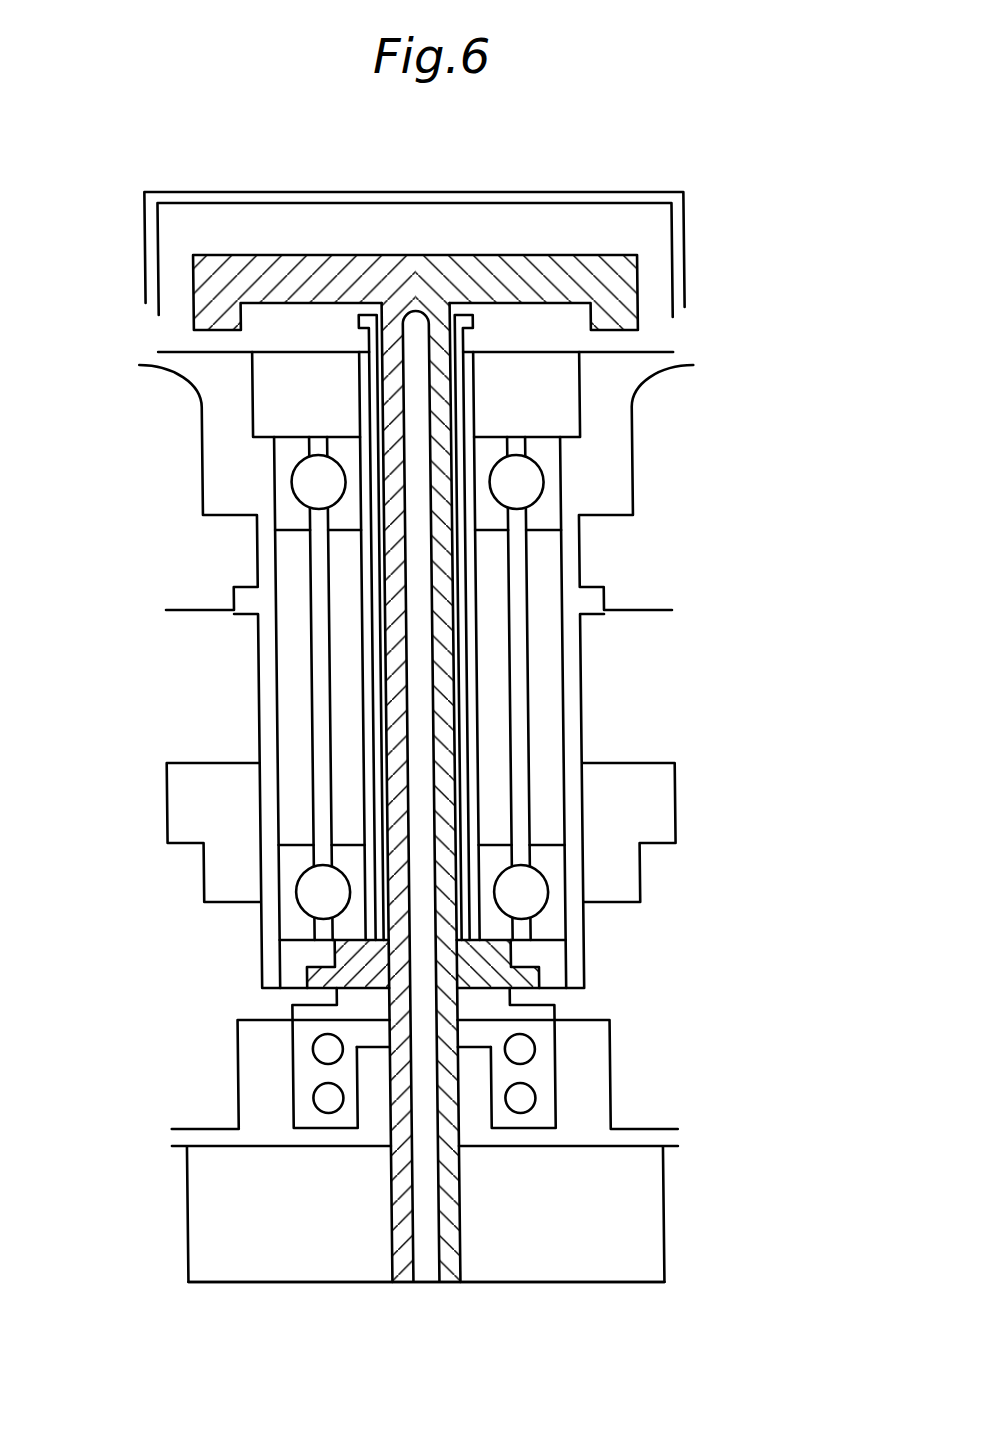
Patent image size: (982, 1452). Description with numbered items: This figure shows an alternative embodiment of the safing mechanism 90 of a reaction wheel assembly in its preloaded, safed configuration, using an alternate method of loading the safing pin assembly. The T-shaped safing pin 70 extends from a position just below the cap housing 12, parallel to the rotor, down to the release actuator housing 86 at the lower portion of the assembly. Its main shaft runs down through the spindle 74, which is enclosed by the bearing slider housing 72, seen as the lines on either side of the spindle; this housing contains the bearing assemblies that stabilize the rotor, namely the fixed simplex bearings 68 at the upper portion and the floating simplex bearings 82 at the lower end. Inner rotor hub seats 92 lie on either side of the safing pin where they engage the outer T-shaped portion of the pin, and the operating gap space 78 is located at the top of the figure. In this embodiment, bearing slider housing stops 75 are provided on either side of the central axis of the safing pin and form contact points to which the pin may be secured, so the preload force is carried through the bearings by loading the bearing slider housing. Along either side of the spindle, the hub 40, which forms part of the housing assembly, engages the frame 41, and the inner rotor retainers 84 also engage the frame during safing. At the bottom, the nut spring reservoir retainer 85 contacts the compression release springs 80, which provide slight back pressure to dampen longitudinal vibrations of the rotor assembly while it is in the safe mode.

The safing mechanism 90 is at (695, 122).
The cap housing 12 is at (205, 190).
The safing pin 70 is at (340, 266).
The spindle shaft 74 is at (438, 328).
The bearing slider housing stops 75 is at (330, 334).
The operating gap space 78 is at (193, 343).
The bearing slider housing 72 is at (363, 412).
The inner rotor hub seats 92 is at (220, 428).
The fixed simplex bearings 68 is at (318, 490).
The floating simplex bearings 82 is at (332, 893).
The hub 40 is at (277, 925).
The inner rotor retainers 84 is at (295, 967).
The nut spring reservoir retainer 85 is at (355, 1003).
The compression release springs 80 is at (348, 1117).
The frame 41 is at (258, 1123).
The release actuator housing 86 is at (330, 1285).